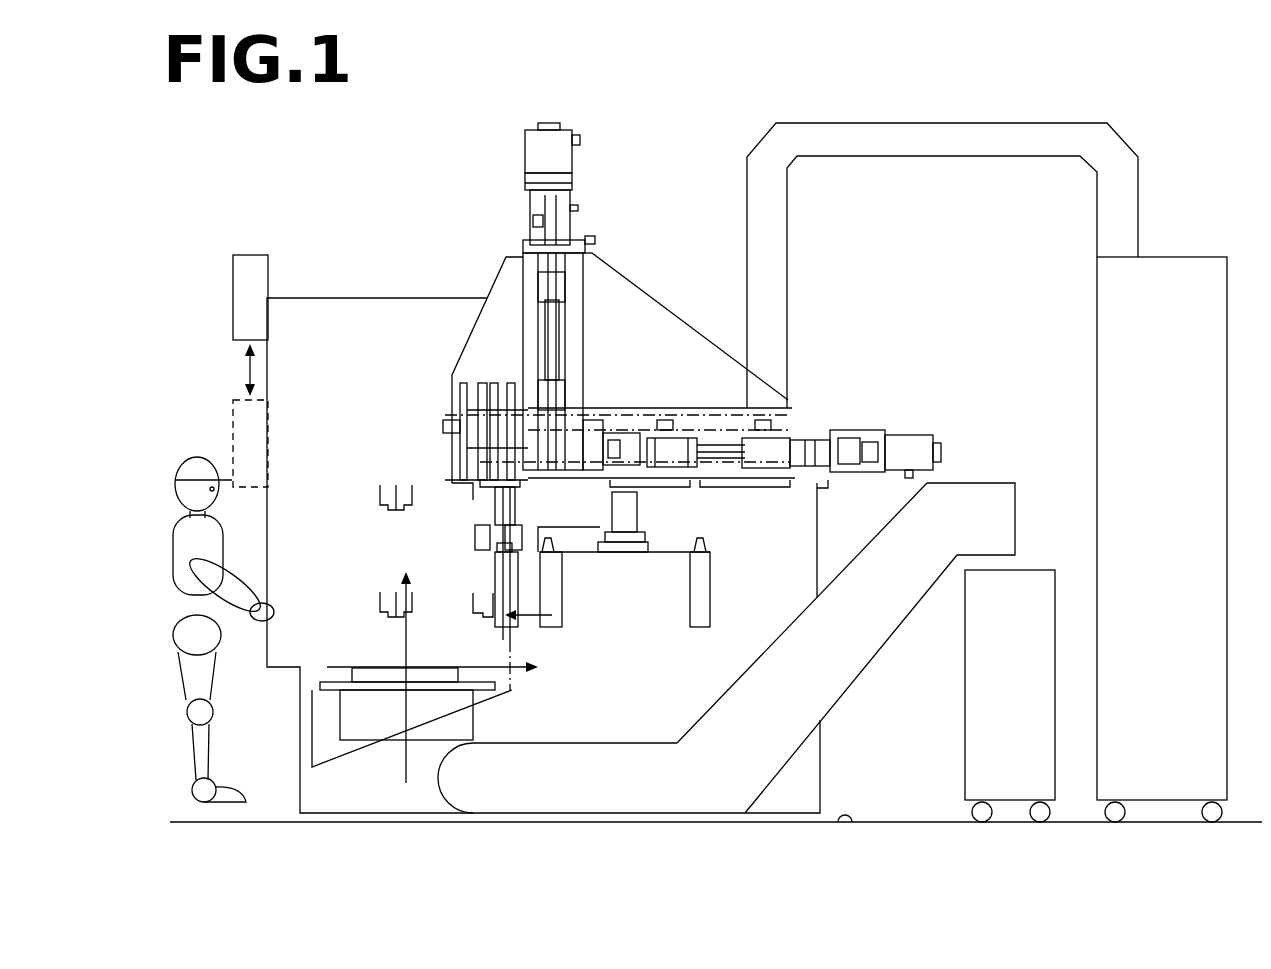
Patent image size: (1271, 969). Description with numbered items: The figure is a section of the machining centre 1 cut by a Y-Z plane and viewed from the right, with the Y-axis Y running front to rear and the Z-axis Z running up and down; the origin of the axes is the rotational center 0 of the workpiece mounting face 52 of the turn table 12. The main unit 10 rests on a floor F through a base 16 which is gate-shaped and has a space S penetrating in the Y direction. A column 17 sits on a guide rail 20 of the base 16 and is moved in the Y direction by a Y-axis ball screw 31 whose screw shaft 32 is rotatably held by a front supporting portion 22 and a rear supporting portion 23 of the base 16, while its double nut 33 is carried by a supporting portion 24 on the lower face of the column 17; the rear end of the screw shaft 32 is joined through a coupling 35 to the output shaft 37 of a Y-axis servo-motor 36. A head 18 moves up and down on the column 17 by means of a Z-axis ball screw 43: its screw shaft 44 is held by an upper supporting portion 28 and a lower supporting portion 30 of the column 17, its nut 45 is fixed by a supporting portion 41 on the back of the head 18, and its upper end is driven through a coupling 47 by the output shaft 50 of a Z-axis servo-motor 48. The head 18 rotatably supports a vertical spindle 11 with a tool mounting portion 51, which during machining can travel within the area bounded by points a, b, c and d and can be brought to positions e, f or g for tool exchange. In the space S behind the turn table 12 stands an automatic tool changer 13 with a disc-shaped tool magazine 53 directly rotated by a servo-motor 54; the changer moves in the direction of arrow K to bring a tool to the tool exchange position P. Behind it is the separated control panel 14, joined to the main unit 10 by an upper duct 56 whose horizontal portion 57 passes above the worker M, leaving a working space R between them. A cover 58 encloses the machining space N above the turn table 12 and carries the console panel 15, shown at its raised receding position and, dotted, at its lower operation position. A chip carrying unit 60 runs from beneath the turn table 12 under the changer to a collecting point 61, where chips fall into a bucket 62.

The machining centre 1 is at (680, 158).
The main unit 10 is at (653, 303).
The spindle 11 is at (470, 504).
The turn table 12 is at (357, 668).
The automatic tool changer (ATC) 13 is at (596, 554).
The separated control panel 14 is at (1096, 303).
The console panel 15 is at (232, 286).
The base 16 is at (817, 553).
The column 17 is at (670, 312).
The head 18 is at (462, 358).
The guide rail 20 is at (718, 405).
The supporting portion 22 is at (643, 482).
The supporting portion 23 is at (810, 488).
The supporting portion 24 is at (690, 438).
The supporting portion 28 is at (582, 249).
The supporting portion 30 is at (572, 450).
The Y-axis ball screw 31 is at (716, 433).
The screw shaft 32 is at (745, 495).
The nut 33 is at (658, 420).
The coupling 35 is at (846, 432).
The Y-axis servo-motor 36 is at (905, 435).
The output shaft 37 is at (872, 442).
The supporting portion 41 is at (523, 288).
The Z-axis ball screw 43 is at (560, 365).
The screw shaft 44 is at (558, 343).
The nut 45 is at (560, 314).
The coupling 47 is at (527, 226).
The Z-axis servo-motor 48 is at (526, 152).
The output shaft 50 is at (527, 189).
The tool mounting portion 51 is at (488, 508).
The workpiece mounting face 52 is at (450, 663).
The tool magazine 53 is at (657, 556).
The servo-motor 54 is at (640, 516).
The upper duct 56 is at (1066, 122).
The horizontal portion 57 is at (948, 152).
The cover 58 is at (340, 298).
The chip carrying unit 60 is at (652, 747).
The collecting point 61 is at (1017, 486).
The bucket 62 is at (1055, 572).
The floor F is at (842, 824).
The worker M is at (175, 458).
The machining space N is at (395, 318).
The working space R is at (1088, 196).
The space S is at (775, 560).
The tool exchange position (ATC point) P is at (508, 632).
The arrow K is at (528, 602).
The Z-axis Z is at (389, 679).
The Y-axis Y is at (443, 669).
The rotational center 0 is at (406, 667).
The point a is at (490, 516).
The point b is at (393, 511).
The point c is at (393, 618).
The point d is at (486, 621).
The position e is at (528, 532).
The position f is at (512, 553).
The position g is at (490, 549).